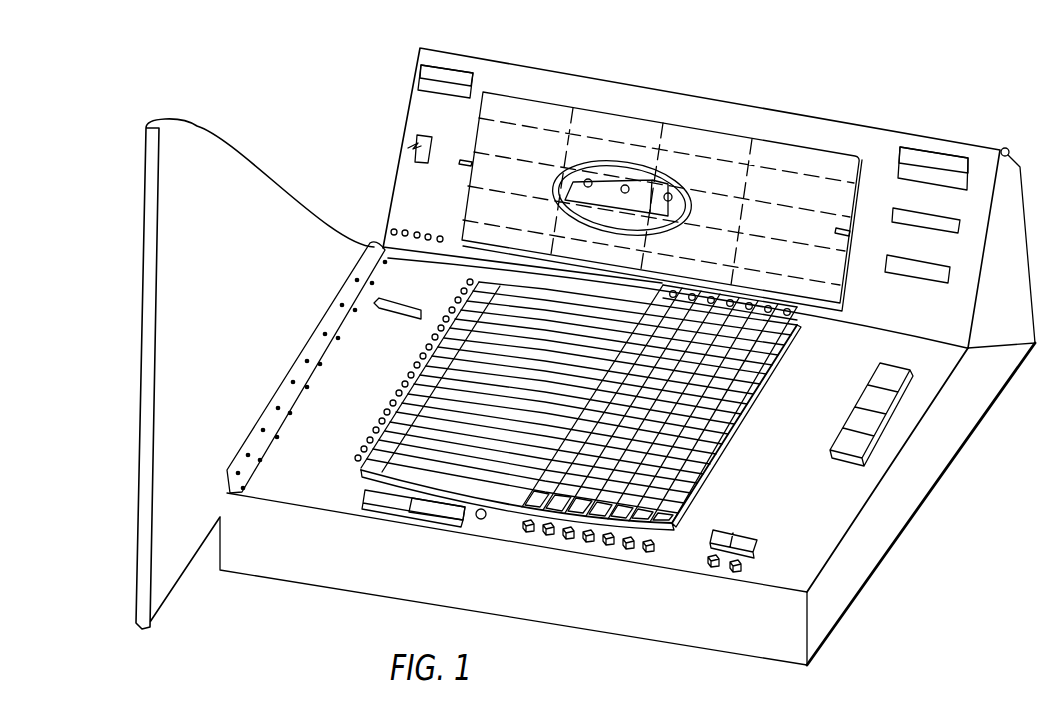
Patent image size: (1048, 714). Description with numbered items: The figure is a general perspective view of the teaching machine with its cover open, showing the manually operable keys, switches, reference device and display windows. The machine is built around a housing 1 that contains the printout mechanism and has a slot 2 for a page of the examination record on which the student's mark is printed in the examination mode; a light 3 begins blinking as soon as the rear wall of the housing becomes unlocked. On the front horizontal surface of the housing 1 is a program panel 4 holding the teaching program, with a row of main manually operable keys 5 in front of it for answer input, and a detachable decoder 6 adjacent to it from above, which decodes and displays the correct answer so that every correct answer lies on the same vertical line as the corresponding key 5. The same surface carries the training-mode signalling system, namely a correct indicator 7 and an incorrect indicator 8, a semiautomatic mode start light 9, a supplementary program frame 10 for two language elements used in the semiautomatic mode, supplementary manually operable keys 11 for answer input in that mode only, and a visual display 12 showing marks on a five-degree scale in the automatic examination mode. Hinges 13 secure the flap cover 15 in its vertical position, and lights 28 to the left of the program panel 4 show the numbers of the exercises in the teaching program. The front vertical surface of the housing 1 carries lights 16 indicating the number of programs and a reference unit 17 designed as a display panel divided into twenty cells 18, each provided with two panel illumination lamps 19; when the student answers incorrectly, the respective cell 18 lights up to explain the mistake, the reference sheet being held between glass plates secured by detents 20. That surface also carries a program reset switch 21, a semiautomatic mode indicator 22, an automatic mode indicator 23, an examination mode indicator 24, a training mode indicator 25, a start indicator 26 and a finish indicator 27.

The housing 1 is at (277, 568).
The slot 2 is at (380, 305).
The light 3 is at (1006, 148).
The program panel 4 is at (695, 477).
The main manually operable keys 5 is at (647, 550).
The detachable decoder 6 is at (800, 310).
The correct indicator 7 is at (385, 498).
The incorrect indicator 8 is at (443, 512).
The semiautomatic mode start light 9 is at (481, 520).
The supplementary program frame 10 is at (710, 543).
The supplementary manually operable keys 11 is at (735, 572).
The visual display 12 is at (878, 417).
The hinges 13 is at (255, 437).
The flap cover 15 is at (198, 130).
The lights 16 is at (405, 228).
The reference unit 17 is at (721, 167).
The cells 18 is at (620, 178).
The panel illumination lamps 19 is at (588, 178).
The detents 20 is at (845, 232).
The program reset switch 21 is at (420, 140).
The semiautomatic mode indicator 22 is at (463, 93).
The automatic mode indicator 23 is at (458, 78).
The examination mode indicator 24 is at (915, 155).
The training mode indicator 25 is at (950, 178).
The start indicator 26 is at (958, 226).
The finish indicator 27 is at (948, 274).
The lights 28 is at (365, 440).